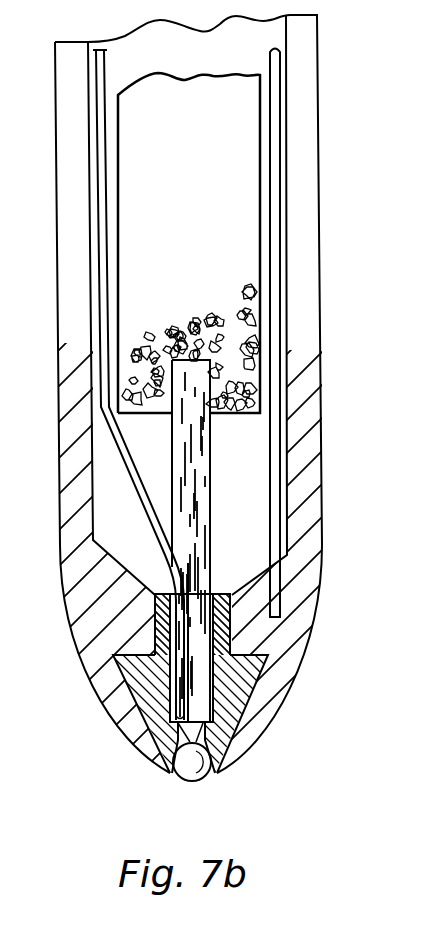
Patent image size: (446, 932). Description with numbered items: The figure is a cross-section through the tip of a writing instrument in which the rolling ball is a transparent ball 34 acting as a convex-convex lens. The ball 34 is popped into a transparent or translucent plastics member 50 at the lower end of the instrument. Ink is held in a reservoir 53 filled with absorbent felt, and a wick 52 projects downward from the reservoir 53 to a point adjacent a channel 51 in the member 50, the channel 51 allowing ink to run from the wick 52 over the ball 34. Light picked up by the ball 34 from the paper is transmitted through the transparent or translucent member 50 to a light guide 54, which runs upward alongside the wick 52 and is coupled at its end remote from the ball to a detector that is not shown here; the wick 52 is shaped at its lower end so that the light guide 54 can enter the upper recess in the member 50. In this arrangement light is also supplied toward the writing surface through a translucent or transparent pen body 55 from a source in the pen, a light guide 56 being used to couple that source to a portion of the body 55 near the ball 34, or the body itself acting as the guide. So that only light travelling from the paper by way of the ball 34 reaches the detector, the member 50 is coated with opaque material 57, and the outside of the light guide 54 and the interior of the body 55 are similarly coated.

The transparent ball 34 is at (200, 773).
The transparent or translucent plastics member 50 is at (233, 694).
The channel 51 is at (192, 732).
The wick 52 is at (200, 502).
The reservoir 53 is at (250, 313).
The light guide 54 is at (178, 674).
The pen body 55 is at (308, 392).
The light guide 56 is at (278, 221).
The opaque material 57 is at (236, 631).